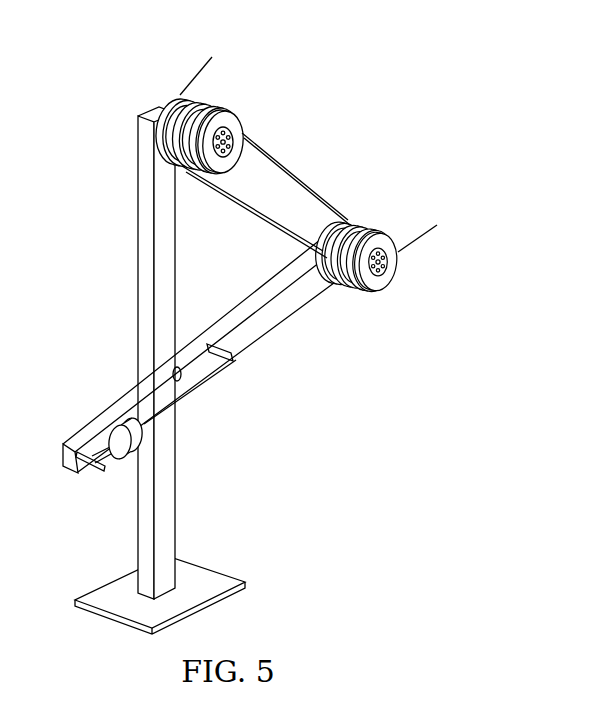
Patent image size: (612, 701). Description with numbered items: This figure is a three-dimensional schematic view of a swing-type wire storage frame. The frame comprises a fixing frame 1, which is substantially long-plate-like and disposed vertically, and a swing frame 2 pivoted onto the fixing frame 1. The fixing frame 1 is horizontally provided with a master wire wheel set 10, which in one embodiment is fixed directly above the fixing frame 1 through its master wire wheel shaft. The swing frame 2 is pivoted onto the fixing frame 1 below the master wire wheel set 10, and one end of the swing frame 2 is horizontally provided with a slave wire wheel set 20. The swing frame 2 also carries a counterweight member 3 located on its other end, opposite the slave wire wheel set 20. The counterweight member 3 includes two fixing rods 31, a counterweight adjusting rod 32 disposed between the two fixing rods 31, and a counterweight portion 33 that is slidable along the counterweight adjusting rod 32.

The fixing frame 1 is at (142, 281).
The swing frame 2 is at (100, 408).
The counterweight member 3 is at (176, 407).
The fixing rods 31 is at (232, 357).
The counterweight adjusting rod 32 is at (183, 397).
The counterweight portion 33 is at (142, 446).
The master wire wheel set 10 is at (243, 108).
The slave wire wheel set 20 is at (366, 218).